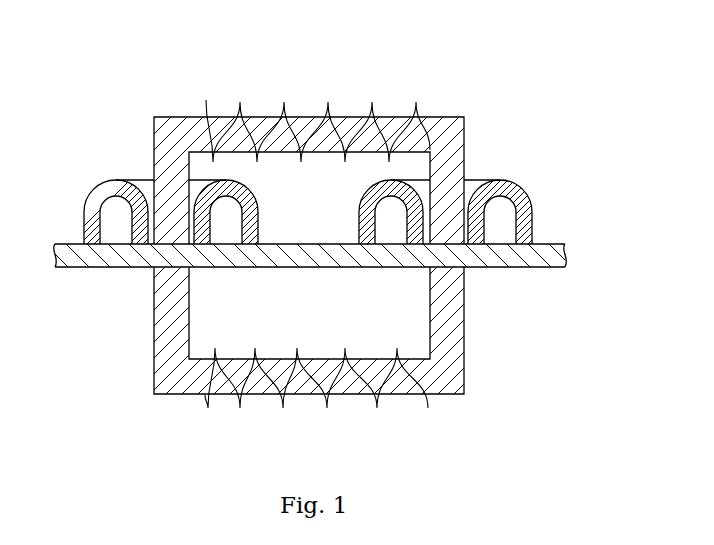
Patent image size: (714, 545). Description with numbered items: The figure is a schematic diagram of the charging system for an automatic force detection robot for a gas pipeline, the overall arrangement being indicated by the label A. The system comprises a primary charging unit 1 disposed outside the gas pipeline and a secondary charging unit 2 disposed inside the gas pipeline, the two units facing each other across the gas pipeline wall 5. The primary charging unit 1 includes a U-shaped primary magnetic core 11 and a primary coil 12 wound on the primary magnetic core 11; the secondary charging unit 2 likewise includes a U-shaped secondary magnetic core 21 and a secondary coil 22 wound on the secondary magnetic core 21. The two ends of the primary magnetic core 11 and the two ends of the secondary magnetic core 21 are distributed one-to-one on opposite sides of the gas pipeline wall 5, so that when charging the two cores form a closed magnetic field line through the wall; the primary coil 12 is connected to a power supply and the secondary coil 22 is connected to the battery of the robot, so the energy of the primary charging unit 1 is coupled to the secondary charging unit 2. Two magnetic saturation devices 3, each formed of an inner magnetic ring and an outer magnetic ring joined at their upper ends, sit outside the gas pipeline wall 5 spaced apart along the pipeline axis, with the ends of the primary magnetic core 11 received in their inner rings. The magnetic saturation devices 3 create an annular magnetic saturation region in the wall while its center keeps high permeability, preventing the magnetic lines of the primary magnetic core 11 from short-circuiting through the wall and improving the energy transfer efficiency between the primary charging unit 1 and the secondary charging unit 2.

The connector assembly A is at (123, 147).
The primary charging unit 1 is at (402, 87).
The primary magnetic core 11 is at (183, 128).
The primary coil 12 is at (240, 100).
The secondary charging unit 2 is at (402, 425).
The secondary magnetic core 21 is at (182, 382).
The secondary coil 22 is at (240, 407).
The magnetic saturation device 3 is at (113, 185).
The gas pipeline wall 5 is at (112, 262).